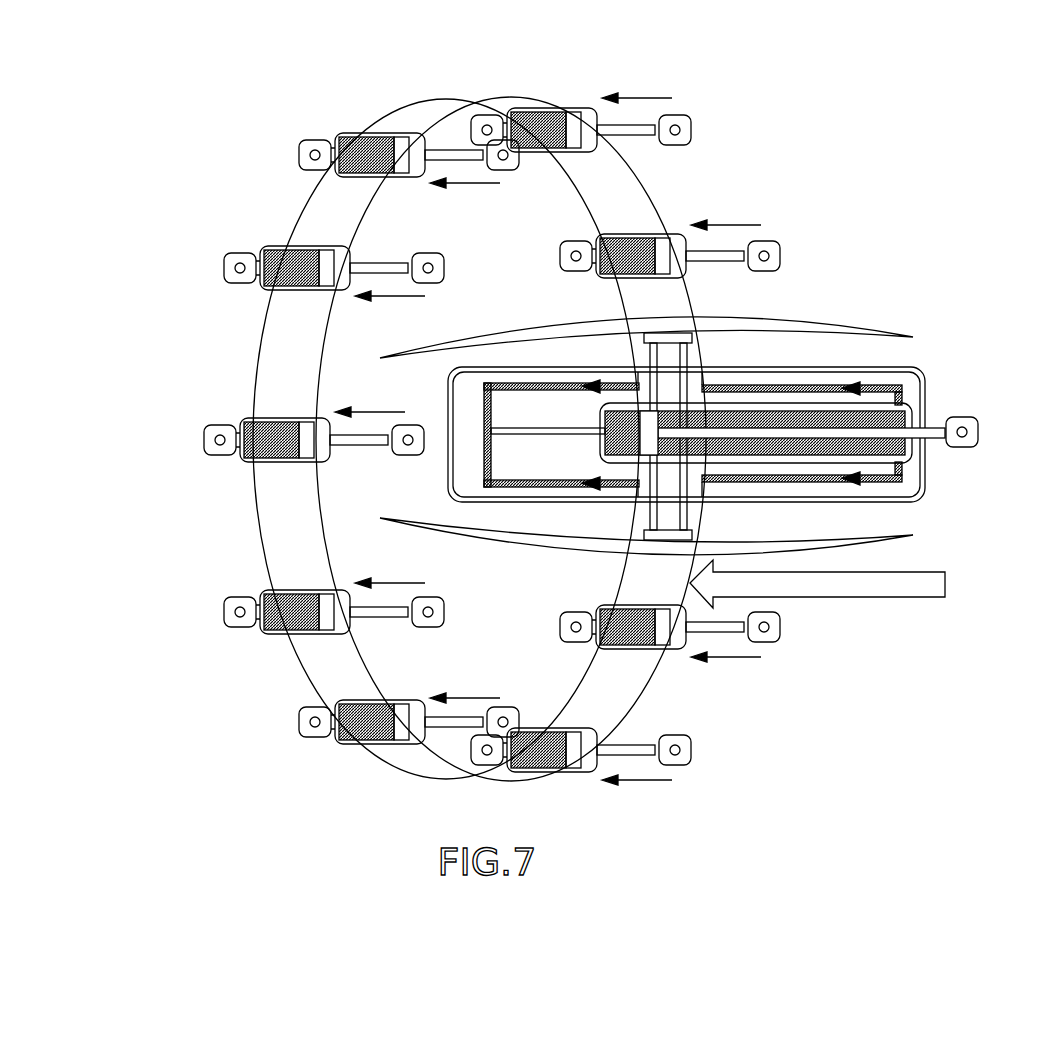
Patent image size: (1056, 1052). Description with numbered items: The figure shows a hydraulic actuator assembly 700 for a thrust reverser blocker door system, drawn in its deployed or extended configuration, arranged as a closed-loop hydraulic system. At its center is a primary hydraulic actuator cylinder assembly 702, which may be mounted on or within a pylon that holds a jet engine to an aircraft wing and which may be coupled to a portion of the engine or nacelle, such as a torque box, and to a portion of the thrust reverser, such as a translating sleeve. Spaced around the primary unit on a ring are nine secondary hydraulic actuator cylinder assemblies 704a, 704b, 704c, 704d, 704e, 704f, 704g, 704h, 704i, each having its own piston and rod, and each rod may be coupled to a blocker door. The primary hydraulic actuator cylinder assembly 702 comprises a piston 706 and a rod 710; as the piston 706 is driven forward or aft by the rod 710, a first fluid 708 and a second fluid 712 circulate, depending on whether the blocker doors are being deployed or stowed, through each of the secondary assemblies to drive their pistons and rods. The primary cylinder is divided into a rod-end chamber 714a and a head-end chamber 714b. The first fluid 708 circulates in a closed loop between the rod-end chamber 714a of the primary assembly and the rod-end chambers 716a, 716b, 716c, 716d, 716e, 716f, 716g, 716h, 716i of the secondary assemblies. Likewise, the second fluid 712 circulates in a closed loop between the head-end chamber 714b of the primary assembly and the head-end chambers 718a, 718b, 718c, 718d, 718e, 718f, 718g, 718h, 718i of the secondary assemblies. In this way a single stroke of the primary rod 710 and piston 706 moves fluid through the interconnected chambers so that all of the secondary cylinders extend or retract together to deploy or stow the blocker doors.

The hydraulic actuator assembly 700 is at (72, 114).
The primary hydraulic actuator cylinder assembly 702 is at (920, 400).
The secondary hydraulic actuator cylinder assembly 704a is at (678, 234).
The secondary hydraulic actuator cylinder assembly 704b is at (560, 108).
The secondary hydraulic actuator cylinder assembly 704c is at (337, 138).
The secondary hydraulic actuator cylinder assembly 704d is at (262, 250).
The secondary hydraulic actuator cylinder assembly 704e is at (240, 420).
The secondary hydraulic actuator cylinder assembly 704f is at (275, 634).
The secondary hydraulic actuator cylinder assembly 704g is at (355, 744).
The secondary hydraulic actuator cylinder assembly 704h is at (555, 728).
The secondary hydraulic actuator cylinder assembly 704i is at (672, 650).
The piston 706 is at (645, 412).
The first fluid 708 is at (905, 450).
The rod 710 is at (927, 443).
The second fluid 712 is at (640, 450).
The rod-end chamber 714a is at (860, 410).
The head-end chamber 714b is at (650, 418).
The rod-end chamber 716a is at (735, 254).
The rod-end chamber 716b is at (615, 126).
The rod-end chamber 716c is at (430, 150).
The rod-end chamber 716d is at (285, 246).
The rod-end chamber 716e is at (320, 428).
The rod-end chamber 716f is at (262, 598).
The rod-end chamber 716g is at (418, 752).
The rod-end chamber 716h is at (600, 782).
The rod-end chamber 716i is at (690, 657).
The head-end chamber 718a is at (622, 238).
The head-end chamber 718b is at (535, 112).
The head-end chamber 718c is at (370, 137).
The head-end chamber 718d is at (265, 287).
The head-end chamber 718e is at (265, 457).
The head-end chamber 718f is at (265, 630).
The head-end chamber 718g is at (340, 740).
The head-end chamber 718h is at (543, 776).
The head-end chamber 718i is at (627, 645).